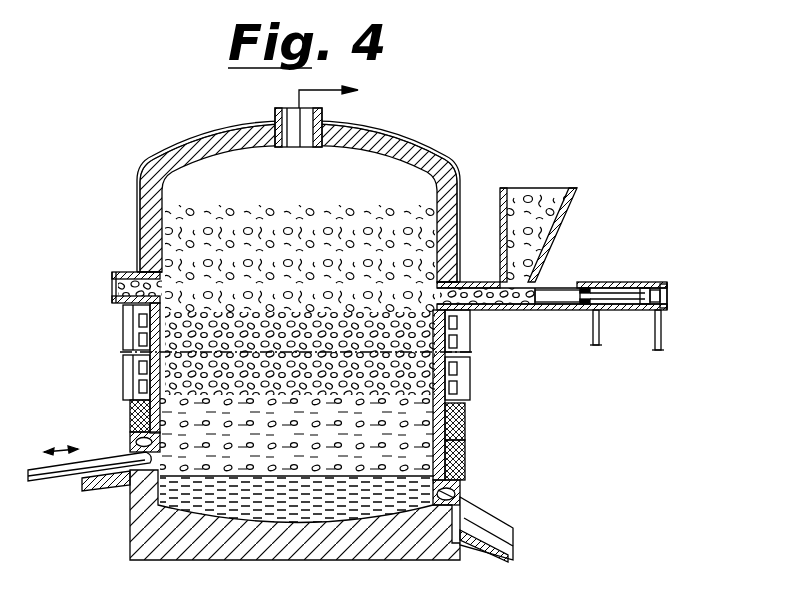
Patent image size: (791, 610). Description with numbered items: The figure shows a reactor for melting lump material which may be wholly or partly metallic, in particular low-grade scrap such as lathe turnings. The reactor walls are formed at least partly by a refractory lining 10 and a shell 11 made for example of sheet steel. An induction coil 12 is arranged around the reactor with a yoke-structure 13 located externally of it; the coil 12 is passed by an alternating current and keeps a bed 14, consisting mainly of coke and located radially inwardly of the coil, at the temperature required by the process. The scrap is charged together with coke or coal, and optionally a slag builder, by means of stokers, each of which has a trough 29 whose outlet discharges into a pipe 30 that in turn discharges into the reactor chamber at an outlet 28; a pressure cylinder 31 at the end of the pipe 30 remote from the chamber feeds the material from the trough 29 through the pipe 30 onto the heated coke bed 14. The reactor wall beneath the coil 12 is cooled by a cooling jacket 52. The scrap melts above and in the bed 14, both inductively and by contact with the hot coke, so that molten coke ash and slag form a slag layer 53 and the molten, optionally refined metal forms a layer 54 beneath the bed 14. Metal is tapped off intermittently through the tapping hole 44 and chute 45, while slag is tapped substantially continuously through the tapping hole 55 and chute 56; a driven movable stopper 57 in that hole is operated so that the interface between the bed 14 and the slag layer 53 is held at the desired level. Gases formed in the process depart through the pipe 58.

The refractory lining 10 is at (147, 219).
The shell 11 is at (138, 193).
The induction coil 12 is at (456, 342).
The yoke-structure 13 is at (130, 320).
The bed 14 is at (160, 366).
The outlet 28 is at (142, 268).
The trough 29 is at (548, 218).
The pipe 30 is at (118, 272).
The pressure cylinder 31 is at (618, 283).
The tapping hole 44 is at (462, 505).
The chute 45 is at (513, 529).
The cooling jacket 52 is at (135, 410).
The slag layer 53 is at (456, 447).
The carbonaceous iron layer 54 is at (167, 497).
The tapping hole 55 is at (135, 446).
The chute 56 is at (88, 490).
The movable stopper 57 is at (60, 482).
The pipe 58 is at (323, 116).